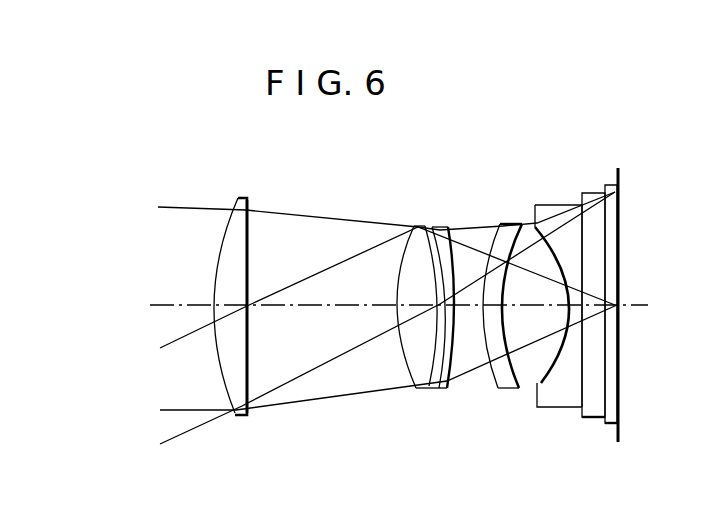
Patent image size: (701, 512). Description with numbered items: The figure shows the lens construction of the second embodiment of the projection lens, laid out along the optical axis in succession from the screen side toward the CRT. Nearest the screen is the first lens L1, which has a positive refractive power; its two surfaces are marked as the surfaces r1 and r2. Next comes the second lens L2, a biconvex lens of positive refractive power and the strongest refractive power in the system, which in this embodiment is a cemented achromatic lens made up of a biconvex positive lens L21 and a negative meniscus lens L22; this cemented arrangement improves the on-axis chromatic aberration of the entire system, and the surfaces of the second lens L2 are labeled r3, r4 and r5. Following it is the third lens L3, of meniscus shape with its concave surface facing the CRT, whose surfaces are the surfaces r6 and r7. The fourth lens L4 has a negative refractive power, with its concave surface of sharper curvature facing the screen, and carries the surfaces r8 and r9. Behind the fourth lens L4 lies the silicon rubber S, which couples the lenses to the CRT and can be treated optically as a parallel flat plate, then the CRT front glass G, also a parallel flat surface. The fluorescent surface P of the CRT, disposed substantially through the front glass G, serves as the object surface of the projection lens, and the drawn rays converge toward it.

The first lens L1 is at (240, 198).
The second lens L2 is at (473, 177).
The biconvex positive lens L21 is at (418, 224).
The negative meniscus lens L22 is at (442, 226).
The third lens L3 is at (510, 223).
The fourth lens L4 is at (550, 205).
The silicon rubber S is at (592, 192).
The CRT front glass G is at (607, 184).
The fluorescent surface P is at (620, 202).
The first refracting surface r1 is at (232, 400).
The second refracting surface r2 is at (248, 390).
The third refracting surface r3 is at (405, 365).
The fourth refracting surface r4 is at (428, 368).
The fifth refracting surface r5 is at (452, 367).
The sixth refracting surface r6 is at (497, 368).
The seventh refracting surface r7 is at (510, 378).
The eighth refracting surface r8 is at (548, 388).
The ninth refracting surface r9 is at (575, 395).